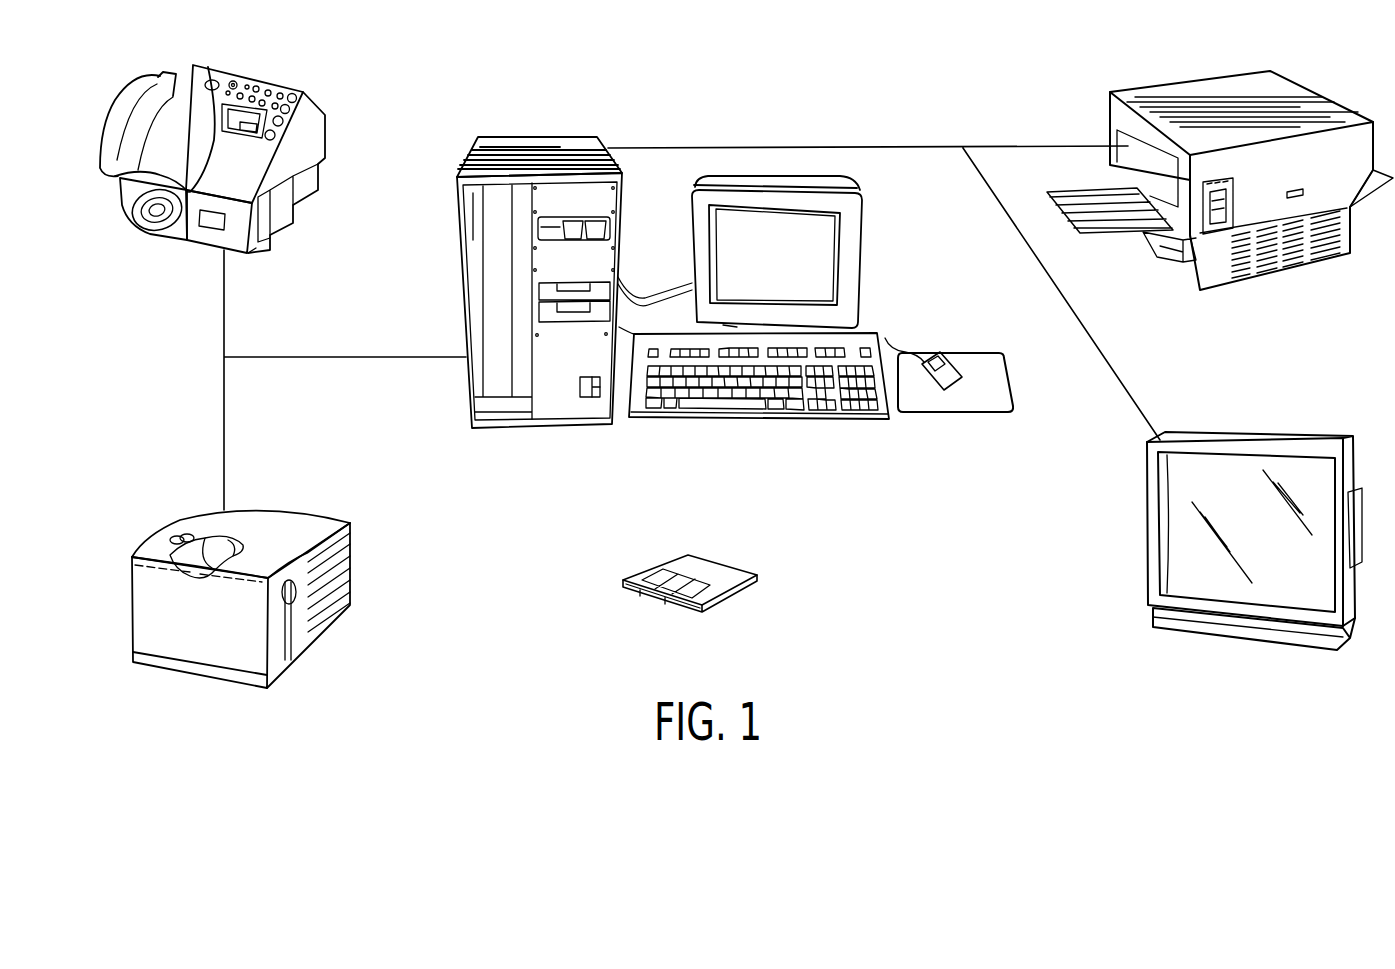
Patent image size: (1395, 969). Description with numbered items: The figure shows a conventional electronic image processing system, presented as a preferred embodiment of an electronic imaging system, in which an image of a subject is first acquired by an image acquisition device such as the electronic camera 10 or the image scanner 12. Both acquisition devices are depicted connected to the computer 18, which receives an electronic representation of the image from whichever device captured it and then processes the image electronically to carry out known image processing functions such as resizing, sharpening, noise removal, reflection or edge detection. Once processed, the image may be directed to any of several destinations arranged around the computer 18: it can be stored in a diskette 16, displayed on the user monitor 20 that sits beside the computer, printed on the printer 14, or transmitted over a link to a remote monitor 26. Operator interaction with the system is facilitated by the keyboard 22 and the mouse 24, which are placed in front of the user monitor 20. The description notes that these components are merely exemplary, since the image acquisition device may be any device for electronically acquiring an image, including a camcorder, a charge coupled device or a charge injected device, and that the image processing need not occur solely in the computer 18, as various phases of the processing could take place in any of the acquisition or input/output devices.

The electronic camera 10 is at (278, 88).
The image scanner 12 is at (320, 510).
The printer 14 is at (1110, 108).
The diskette 16 is at (715, 562).
The computer 18 is at (540, 135).
The user monitor 20 is at (866, 263).
The keyboard 22 is at (668, 423).
The mouse 24 is at (950, 358).
The remote monitor 26 is at (1147, 537).